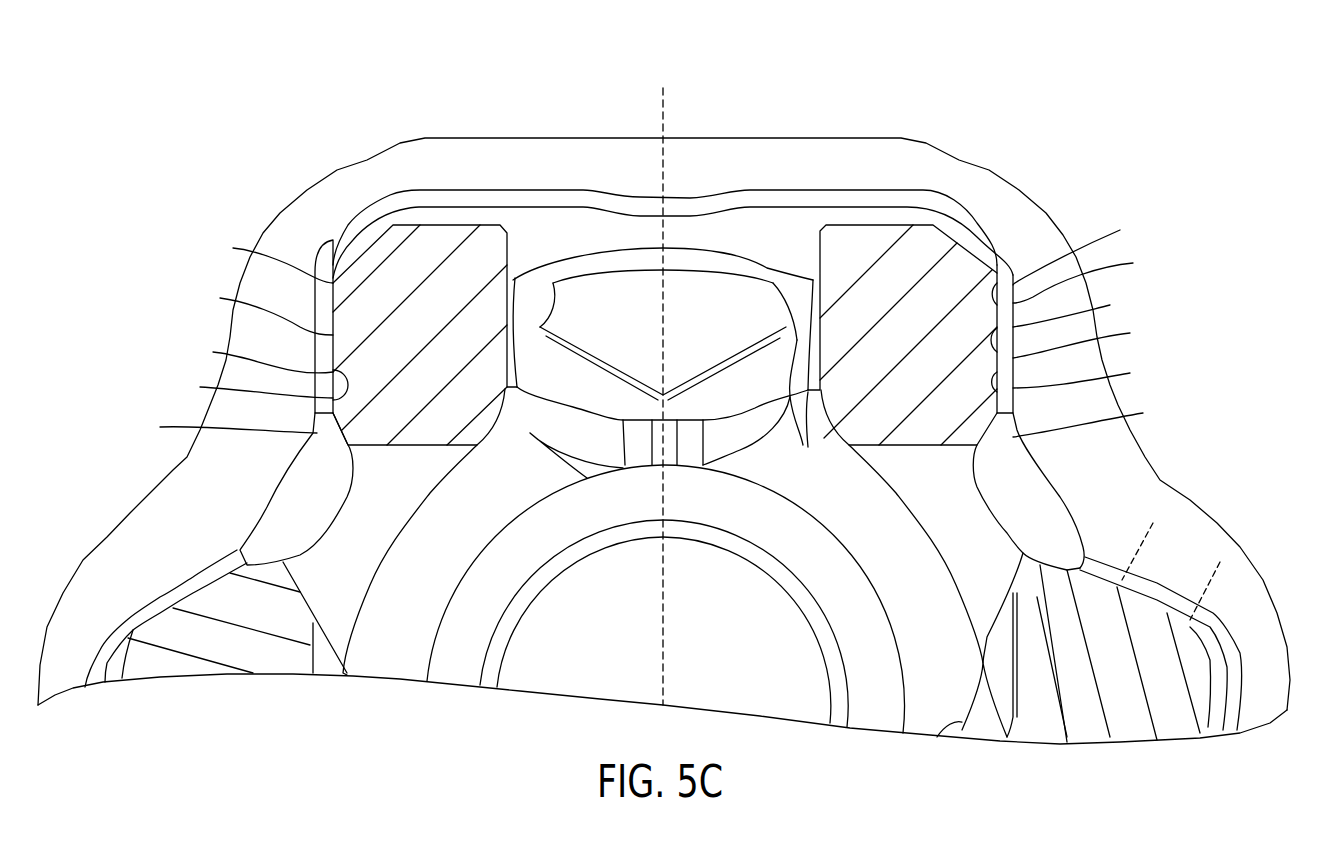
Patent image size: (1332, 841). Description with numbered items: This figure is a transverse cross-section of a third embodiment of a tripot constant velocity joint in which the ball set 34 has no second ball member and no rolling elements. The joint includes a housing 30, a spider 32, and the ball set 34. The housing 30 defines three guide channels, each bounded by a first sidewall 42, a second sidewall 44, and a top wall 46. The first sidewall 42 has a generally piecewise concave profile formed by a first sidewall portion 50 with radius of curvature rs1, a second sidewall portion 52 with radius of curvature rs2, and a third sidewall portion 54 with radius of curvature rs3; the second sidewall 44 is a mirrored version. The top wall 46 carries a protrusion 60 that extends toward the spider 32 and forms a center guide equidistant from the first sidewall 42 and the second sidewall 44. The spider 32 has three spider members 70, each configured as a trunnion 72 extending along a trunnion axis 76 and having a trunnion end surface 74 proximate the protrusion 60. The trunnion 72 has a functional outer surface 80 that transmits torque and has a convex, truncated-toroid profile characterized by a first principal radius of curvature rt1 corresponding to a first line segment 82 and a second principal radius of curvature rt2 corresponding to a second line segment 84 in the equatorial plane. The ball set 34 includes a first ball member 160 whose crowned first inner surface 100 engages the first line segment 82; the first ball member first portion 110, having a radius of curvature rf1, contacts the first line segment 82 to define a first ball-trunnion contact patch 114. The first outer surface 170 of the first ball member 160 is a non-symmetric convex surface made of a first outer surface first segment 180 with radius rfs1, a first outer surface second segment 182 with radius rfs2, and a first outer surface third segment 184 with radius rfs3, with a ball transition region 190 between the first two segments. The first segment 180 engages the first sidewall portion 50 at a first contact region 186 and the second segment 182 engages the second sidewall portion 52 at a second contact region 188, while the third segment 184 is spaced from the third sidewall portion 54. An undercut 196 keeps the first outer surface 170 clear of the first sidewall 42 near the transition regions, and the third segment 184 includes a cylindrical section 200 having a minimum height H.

The housing 30 is at (1247, 600).
The spider 32 is at (920, 603).
The ball set 34 is at (373, 475).
The first sidewall 42 is at (1013, 273).
The second sidewall 44 is at (333, 242).
The top wall 46 is at (493, 207).
The first sidewall portion 50 is at (272, 259).
The second sidewall portion 52 is at (265, 310).
The third sidewall portion 54 is at (227, 427).
The protrusion 60 is at (735, 209).
The plurality of spider members 70 is at (514, 461).
The trunnion 72 is at (620, 342).
The trunnion end surface 74 is at (645, 258).
The trunnion axis 76 is at (668, 483).
The functional outer surface 80 is at (800, 417).
The first line segment 82 is at (797, 343).
The second line segment 84 is at (797, 287).
The first inner surface 100 is at (820, 233).
The first ball member first portion 110 is at (812, 297).
The first ball-trunnion contact patch 114 is at (822, 340).
The first ball member 160 is at (910, 303).
The first outer surface 170 is at (330, 277).
The first outer surface first segment 180 is at (1071, 259).
The first outer surface second segment 182 is at (1064, 321).
The first outer surface third segment 184 is at (1092, 418).
The first contact region 186 is at (1087, 275).
The second contact region 188 is at (1087, 339).
The ball transition region 190 is at (671, 366).
The undercut 196 is at (258, 385).
The cylindrical section 200 is at (1147, 607).
The minimum height H is at (1142, 553).
The first sidewall portion radius of curvature rs1 is at (337, 305).
The second sidewall portion radius of curvature rs2 is at (337, 358).
The third sidewall portion radius of curvature rs3 is at (355, 427).
The first principal radius of curvature rt1 is at (805, 304).
The second principal radius of curvature rt2 is at (805, 280).
The first principal radius of curvature of first ball member first portion rf1 is at (825, 292).
The first outer surface first segment radius of curvature rfs1 is at (995, 306).
The first outer surface second segment radius of curvature rfs2 is at (991, 356).
The first outer surface third segment radius of curvature rfs3 is at (985, 421).